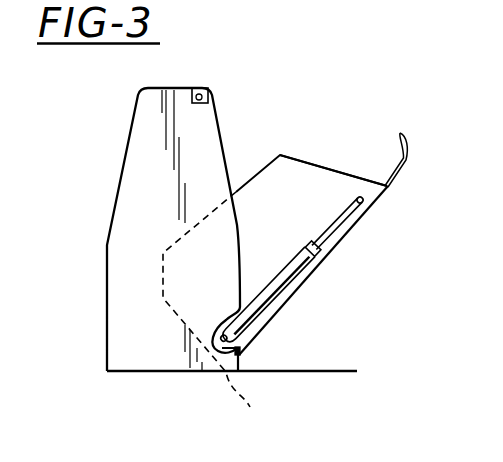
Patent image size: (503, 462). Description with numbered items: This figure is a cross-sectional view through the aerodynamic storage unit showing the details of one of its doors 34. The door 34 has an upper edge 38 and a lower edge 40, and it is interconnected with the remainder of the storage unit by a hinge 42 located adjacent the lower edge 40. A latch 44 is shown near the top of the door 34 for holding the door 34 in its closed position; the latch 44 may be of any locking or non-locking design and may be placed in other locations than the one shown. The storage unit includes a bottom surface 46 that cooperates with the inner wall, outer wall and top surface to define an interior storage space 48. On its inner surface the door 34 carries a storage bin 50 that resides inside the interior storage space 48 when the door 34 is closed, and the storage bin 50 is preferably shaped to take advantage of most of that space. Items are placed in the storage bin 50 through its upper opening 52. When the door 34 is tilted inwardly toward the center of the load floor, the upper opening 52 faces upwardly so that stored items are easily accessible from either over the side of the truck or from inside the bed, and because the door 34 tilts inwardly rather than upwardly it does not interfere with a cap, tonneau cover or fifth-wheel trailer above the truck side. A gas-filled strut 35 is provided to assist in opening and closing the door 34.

The door 34 is at (396, 178).
The gas-filled strut 35 is at (294, 279).
The upper edge 38 is at (400, 133).
The lower edge 40 is at (211, 312).
The hinge 42 is at (243, 355).
The latch 44 is at (205, 90).
The bottom surface 46 is at (155, 372).
The interior storage space 48 is at (131, 243).
The storage bin 50 is at (299, 222).
The upper opening 52 is at (334, 170).